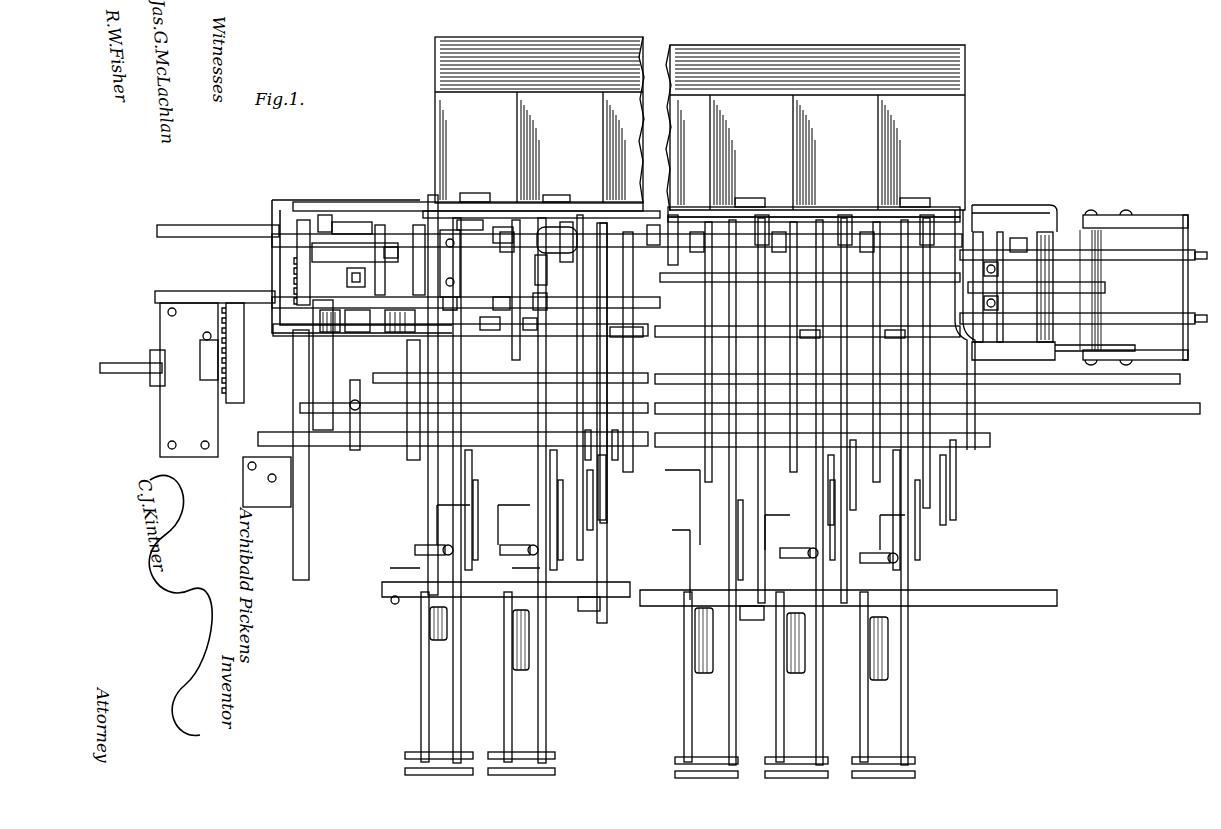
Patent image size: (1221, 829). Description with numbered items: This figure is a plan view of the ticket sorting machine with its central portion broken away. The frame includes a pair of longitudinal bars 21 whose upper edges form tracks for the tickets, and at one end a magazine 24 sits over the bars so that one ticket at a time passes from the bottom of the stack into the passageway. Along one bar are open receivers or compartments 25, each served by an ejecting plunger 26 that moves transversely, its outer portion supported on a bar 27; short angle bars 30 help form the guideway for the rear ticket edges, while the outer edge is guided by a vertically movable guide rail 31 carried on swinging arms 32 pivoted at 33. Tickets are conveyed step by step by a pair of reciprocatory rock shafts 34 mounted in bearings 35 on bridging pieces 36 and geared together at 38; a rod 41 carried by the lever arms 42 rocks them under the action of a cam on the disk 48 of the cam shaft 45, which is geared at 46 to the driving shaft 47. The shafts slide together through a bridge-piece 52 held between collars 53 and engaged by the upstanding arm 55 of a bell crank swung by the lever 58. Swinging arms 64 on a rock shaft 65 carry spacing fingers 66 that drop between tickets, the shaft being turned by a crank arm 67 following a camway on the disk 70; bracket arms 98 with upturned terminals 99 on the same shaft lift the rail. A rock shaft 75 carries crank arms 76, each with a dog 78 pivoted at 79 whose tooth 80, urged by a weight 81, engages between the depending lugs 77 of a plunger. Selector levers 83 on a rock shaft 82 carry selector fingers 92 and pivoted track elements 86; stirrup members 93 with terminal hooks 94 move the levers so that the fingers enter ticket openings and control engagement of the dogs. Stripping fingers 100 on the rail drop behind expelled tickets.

The longitudinal bars 21 is at (432, 208).
The magazine 24 is at (1010, 213).
The receivers or compartments 25 is at (700, 124).
The ejecting plunger 26 is at (916, 705).
The bar 27 is at (385, 590).
The angle bars 30 is at (707, 322).
The movable guide rail or gate 31 is at (683, 215).
The swinging arms 32 is at (600, 357).
The pivot 33 is at (592, 612).
The reciprocatory rock shafts 34 is at (1140, 312).
The bearings 35 is at (1043, 235).
The bridging pieces 36 is at (1015, 238).
The gearing 38 is at (283, 270).
The rod 41 is at (335, 243).
The lever arms 42 is at (380, 243).
The cam shaft 45 is at (258, 358).
The gearing 46 is at (212, 335).
The driving shaft 47 is at (112, 365).
The disk 48 is at (313, 358).
The bridge-piece 52 is at (540, 262).
The collars 53 is at (592, 190).
The upstanding arm 55 is at (535, 270).
The lever 58 is at (309, 513).
The swinging arms 64 is at (672, 348).
The rock shaft 65 is at (1110, 415).
The spacing fingers 66 is at (982, 287).
The crank arm 67 is at (352, 450).
The disk 70 is at (407, 430).
The rock shaft 75 is at (410, 446).
The crank arms 76 is at (465, 478).
The depending lugs 77 is at (941, 548).
The dog 78 is at (542, 565).
The pivot 79 is at (415, 548).
The tooth 80 is at (598, 538).
The weight 81 is at (913, 648).
The rock shaft 82 is at (685, 383).
The selector levers 83 is at (960, 518).
The track elements 86 is at (597, 515).
The selector fingers 92 is at (832, 230).
The stirrup member 93 is at (679, 409).
The terminal hooks 94 is at (604, 495).
The bracket arms 98 is at (618, 455).
The upturned terminals 99 is at (590, 458).
The stripping fingers 100 is at (500, 188).